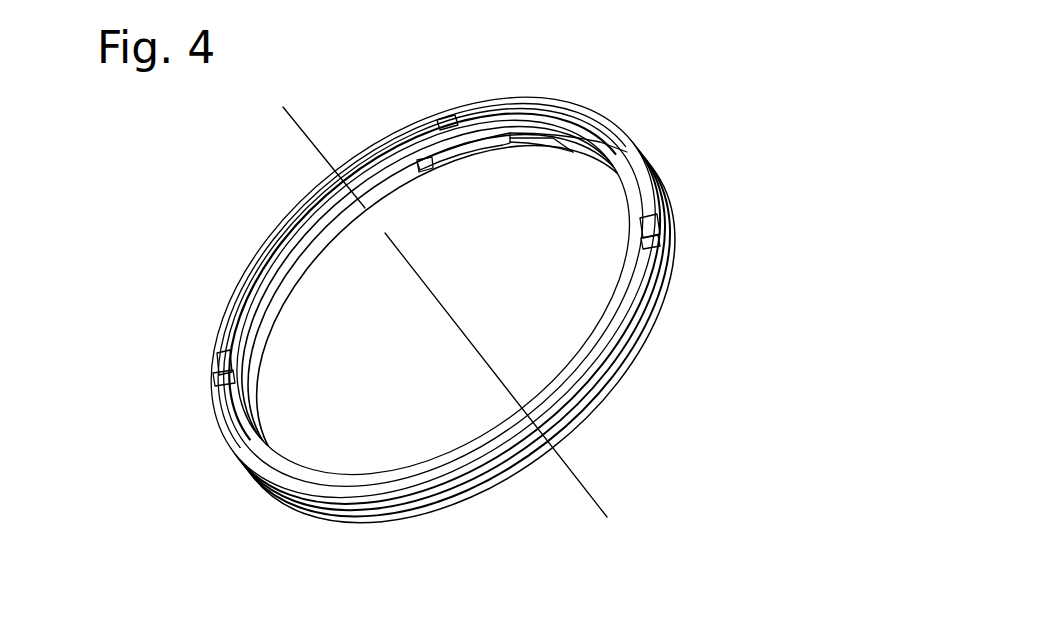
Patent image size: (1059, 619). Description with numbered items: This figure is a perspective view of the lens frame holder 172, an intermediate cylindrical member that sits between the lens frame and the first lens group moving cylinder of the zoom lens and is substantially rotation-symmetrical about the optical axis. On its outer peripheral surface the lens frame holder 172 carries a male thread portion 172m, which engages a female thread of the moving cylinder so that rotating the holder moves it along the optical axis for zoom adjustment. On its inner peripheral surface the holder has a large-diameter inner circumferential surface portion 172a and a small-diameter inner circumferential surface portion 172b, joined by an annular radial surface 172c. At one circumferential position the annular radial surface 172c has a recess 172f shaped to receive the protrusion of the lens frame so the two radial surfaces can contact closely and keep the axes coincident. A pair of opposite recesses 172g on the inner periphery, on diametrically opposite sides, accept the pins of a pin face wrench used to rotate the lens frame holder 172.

The lens frame holder 172 is at (703, 135).
The large-diameter inner circumferential surface portion 172a is at (520, 128).
The small-diameter inner circumferential surface portion 172b is at (573, 152).
The annular radial surface 172c is at (538, 138).
The recess 172f is at (483, 148).
The recesses 172g is at (658, 226).
The male thread portion 172m is at (663, 300).